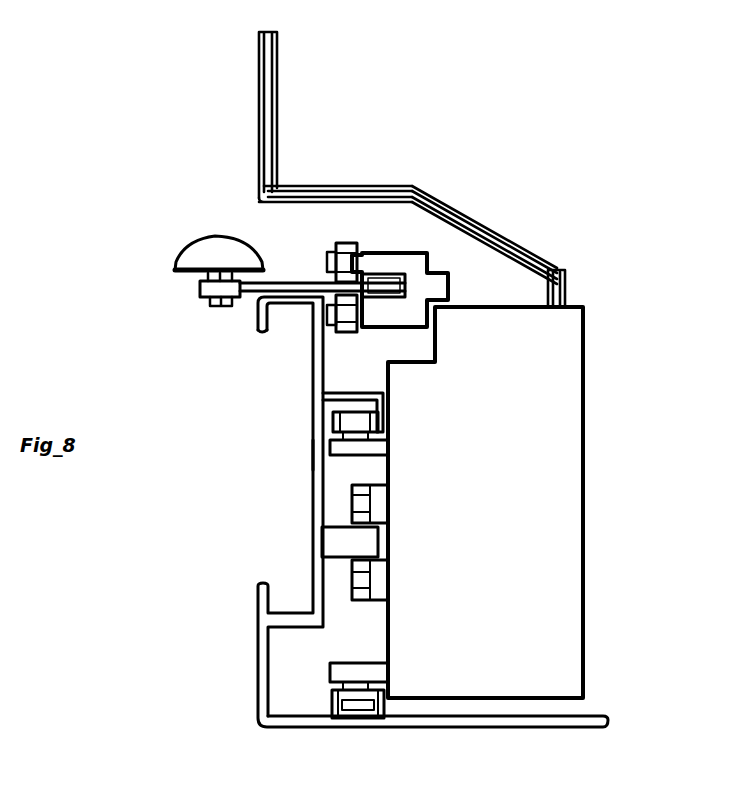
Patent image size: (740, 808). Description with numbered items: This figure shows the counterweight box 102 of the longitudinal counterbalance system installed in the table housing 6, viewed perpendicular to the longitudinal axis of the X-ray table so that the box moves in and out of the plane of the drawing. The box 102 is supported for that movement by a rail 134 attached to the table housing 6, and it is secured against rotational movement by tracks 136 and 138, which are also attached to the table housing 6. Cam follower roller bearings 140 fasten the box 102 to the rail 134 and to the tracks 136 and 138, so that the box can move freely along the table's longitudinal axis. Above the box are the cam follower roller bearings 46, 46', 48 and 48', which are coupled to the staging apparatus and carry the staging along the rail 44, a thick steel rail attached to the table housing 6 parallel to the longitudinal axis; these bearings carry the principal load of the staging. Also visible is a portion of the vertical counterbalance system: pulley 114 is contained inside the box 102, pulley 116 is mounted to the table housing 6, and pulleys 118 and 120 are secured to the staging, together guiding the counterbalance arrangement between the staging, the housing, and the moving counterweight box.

The table housing 6 is at (318, 466).
The rail 44 is at (290, 283).
The cam follower bearing 46 is at (203, 289).
The cam follower bearing 46' is at (400, 267).
The cam follower bearing 48 is at (323, 246).
The cam follower bearing 48' is at (347, 338).
The counterweight box 102 is at (573, 533).
The pulley 114 is at (566, 286).
The pulley 116 is at (520, 246).
The pulley 118 is at (383, 186).
The pulley 120 is at (278, 112).
The rail 134 is at (335, 540).
The track 136 is at (316, 383).
The track 138 is at (330, 708).
The cam follower roller bearings 140 is at (387, 420).